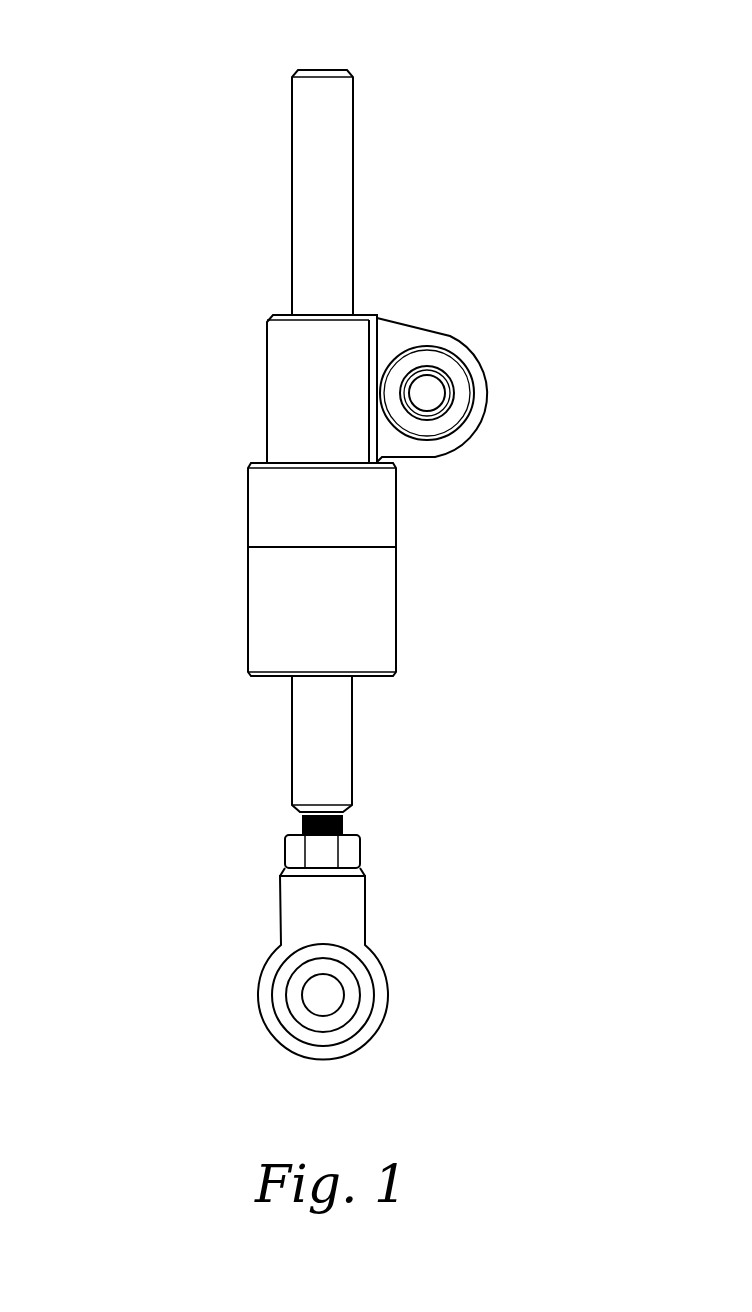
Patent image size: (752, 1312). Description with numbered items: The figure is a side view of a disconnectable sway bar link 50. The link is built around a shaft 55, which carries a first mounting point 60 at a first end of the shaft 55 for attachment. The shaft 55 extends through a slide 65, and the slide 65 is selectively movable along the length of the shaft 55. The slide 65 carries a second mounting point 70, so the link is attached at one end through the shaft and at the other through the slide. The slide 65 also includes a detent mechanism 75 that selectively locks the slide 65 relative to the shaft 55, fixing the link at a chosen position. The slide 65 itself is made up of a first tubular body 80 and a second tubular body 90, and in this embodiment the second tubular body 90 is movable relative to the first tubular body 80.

The disconnectable sway bar link 50 is at (116, 115).
The shaft 55 is at (333, 98).
The first mounting point 60 is at (351, 920).
The slide 65 is at (166, 473).
The second mounting point 70 is at (480, 357).
The detent mechanism 75 is at (438, 557).
The first tubular body 80 is at (280, 388).
The second tubular body 90 is at (260, 635).